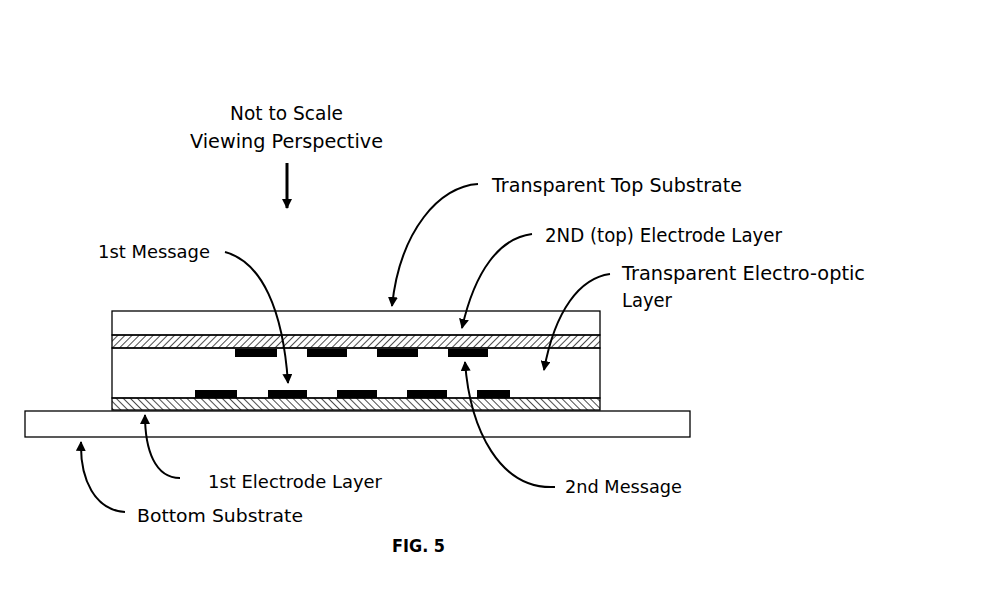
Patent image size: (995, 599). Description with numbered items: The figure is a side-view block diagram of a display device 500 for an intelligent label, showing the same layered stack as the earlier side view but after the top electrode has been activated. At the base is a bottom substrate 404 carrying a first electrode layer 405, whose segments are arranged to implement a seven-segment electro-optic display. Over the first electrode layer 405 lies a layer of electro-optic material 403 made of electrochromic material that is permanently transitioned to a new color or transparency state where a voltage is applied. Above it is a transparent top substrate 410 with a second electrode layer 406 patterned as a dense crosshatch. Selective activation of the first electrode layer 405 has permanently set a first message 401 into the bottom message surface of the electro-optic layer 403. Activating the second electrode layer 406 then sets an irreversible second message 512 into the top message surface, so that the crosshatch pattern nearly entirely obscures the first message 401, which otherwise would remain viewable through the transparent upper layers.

The display device 500 is at (618, 93).
The top substrate 410 is at (190, 320).
The second electrode layer 406 is at (113, 342).
The second message 512 is at (390, 347).
The electro-optic layer 403 is at (590, 364).
The first message 401 is at (427, 398).
The first electrode layer 405 is at (591, 407).
The bottom substrate 404 is at (672, 427).